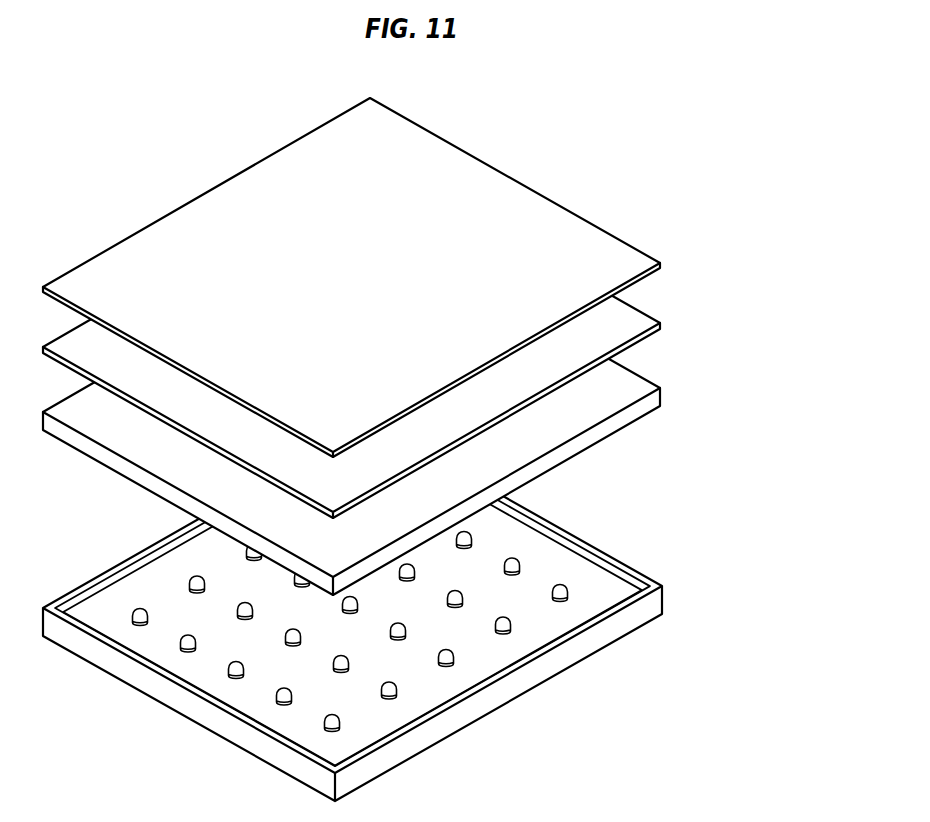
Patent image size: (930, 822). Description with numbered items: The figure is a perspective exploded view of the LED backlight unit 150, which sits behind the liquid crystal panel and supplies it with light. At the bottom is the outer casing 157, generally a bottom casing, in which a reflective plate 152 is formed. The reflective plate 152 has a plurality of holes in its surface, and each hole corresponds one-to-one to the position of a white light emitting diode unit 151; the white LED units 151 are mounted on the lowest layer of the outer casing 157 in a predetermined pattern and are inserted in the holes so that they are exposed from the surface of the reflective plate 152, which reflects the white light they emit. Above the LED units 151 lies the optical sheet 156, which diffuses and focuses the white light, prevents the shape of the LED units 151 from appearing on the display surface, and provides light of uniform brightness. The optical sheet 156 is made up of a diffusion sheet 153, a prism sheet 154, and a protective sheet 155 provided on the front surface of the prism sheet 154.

The LED backlight unit 150 is at (134, 105).
The white light emitting diode unit 151 is at (514, 560).
The reflective plate 152 is at (596, 588).
The diffusion sheet 153 is at (634, 389).
The prism sheet 154 is at (634, 325).
The protective sheet 155 is at (762, 369).
The optical sheet 156 is at (432, 346).
The outer casing 157 is at (623, 621).